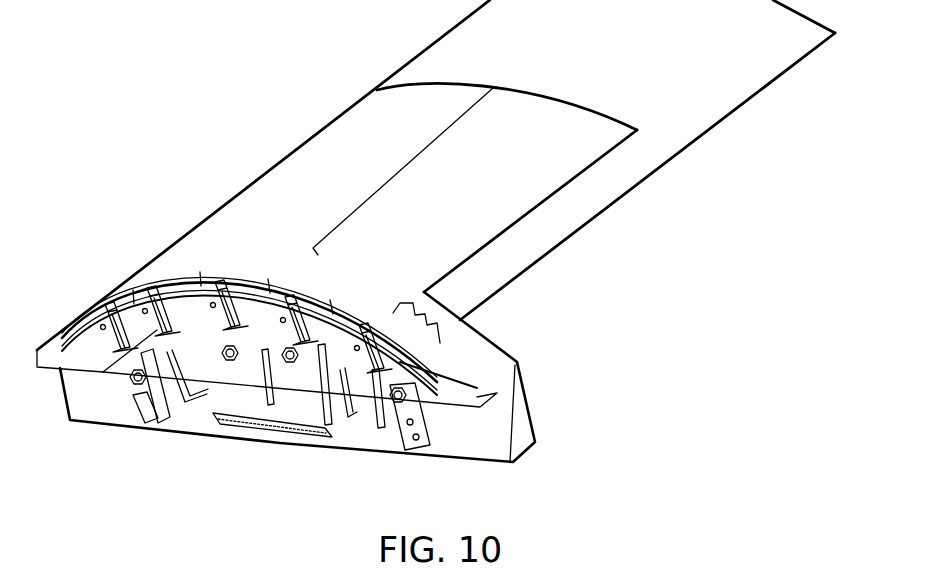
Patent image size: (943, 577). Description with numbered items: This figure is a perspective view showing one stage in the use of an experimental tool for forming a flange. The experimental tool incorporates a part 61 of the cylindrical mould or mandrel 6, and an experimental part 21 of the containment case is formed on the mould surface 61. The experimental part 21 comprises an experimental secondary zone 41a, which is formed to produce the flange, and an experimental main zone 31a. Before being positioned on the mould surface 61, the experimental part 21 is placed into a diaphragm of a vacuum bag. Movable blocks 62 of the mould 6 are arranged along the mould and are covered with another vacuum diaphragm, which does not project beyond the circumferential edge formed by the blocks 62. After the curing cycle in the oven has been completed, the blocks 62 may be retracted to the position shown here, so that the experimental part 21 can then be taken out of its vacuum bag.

The cylindrical mould 6 is at (513, 400).
The experimental part 21 is at (513, 193).
The mould surface 61 is at (687, 107).
The experimental main zone 31a is at (407, 157).
The experimental secondary zone 41a is at (305, 258).
The movable blocks 62 is at (125, 285).